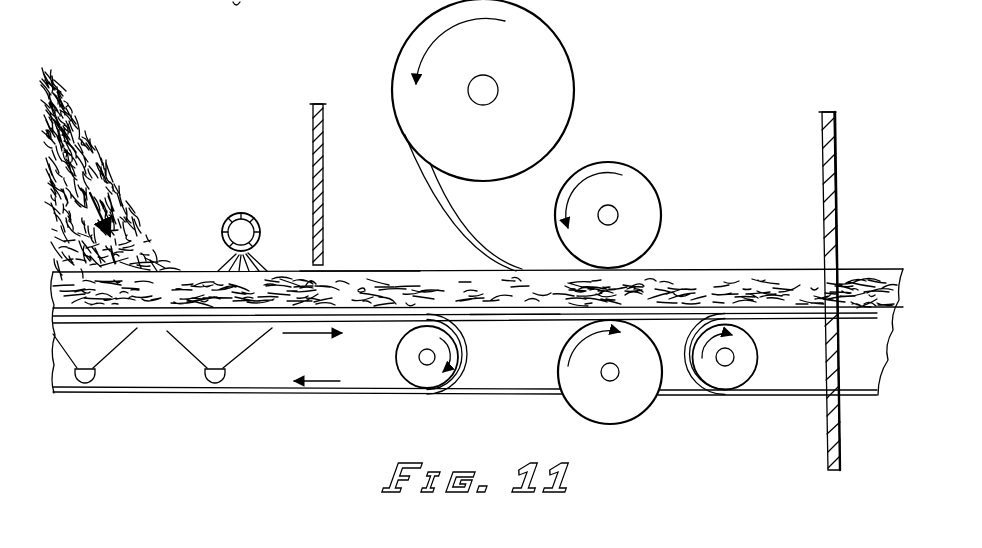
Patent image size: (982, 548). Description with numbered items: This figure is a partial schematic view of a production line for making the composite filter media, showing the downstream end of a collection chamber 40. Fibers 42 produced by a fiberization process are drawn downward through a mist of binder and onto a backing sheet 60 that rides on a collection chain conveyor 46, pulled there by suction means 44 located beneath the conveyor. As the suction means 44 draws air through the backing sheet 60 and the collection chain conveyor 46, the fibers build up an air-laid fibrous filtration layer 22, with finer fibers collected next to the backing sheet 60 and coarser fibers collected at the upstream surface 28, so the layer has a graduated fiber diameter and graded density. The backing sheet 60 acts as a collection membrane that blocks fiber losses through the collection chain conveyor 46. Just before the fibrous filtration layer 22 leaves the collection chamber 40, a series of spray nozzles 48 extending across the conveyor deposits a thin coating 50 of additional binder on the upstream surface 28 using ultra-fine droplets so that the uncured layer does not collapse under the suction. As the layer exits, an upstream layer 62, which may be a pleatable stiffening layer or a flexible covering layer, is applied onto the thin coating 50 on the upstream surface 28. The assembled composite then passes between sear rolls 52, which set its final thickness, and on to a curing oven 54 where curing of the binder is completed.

The fibrous filtration layer 22 is at (420, 290).
The upstream surface 28 is at (152, 271).
The collection chamber 40 is at (303, 148).
The fibers 42 is at (147, 175).
The suction means 44 is at (205, 376).
The collection chain conveyor 46 is at (384, 397).
The spray nozzles 48 is at (246, 214).
The thin coating of binder 50 is at (362, 272).
The sear rolls 52 is at (628, 168).
The curing oven 54 is at (882, 177).
The backing sheet 60 is at (508, 320).
The upstream layer 62 is at (462, 238).